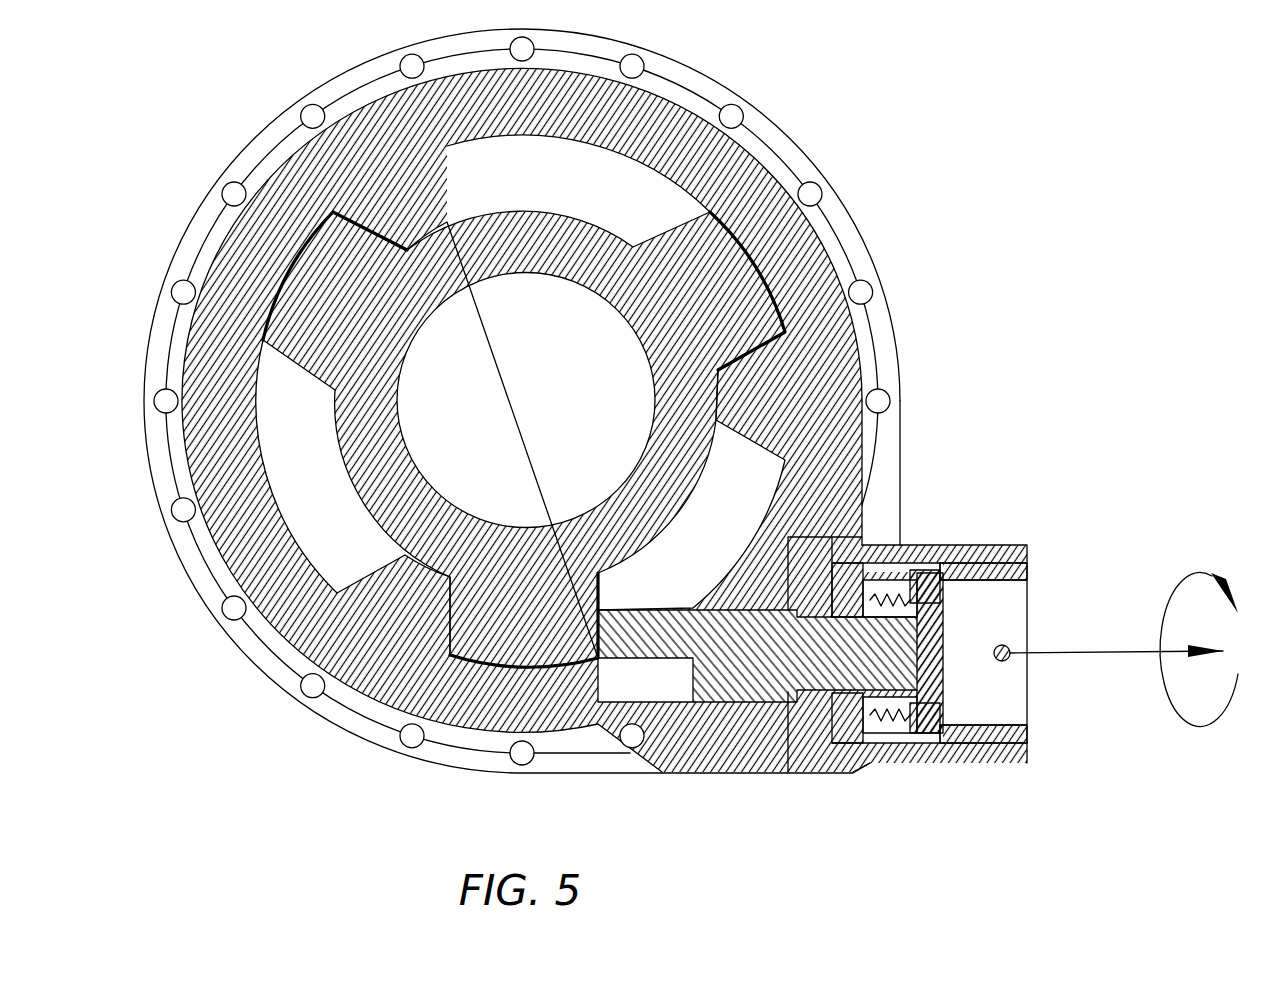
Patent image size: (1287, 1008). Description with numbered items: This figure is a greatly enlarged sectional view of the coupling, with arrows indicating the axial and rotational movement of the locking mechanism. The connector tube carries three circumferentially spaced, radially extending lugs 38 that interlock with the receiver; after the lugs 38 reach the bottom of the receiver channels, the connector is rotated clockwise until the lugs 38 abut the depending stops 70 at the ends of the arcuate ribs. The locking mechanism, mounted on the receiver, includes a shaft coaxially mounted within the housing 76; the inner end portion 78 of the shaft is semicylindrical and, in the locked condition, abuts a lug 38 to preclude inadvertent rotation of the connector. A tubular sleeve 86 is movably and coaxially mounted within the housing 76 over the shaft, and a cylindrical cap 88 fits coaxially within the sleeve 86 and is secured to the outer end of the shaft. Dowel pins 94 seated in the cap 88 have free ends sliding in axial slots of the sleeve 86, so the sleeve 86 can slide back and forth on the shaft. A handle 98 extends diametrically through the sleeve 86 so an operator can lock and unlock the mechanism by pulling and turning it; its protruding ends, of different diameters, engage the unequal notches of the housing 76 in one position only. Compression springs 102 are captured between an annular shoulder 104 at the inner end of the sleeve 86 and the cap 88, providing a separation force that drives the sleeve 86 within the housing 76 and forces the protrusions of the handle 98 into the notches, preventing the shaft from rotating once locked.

The lugs 38 is at (728, 216).
The depending stop 70 is at (755, 398).
The housing 76 is at (1028, 546).
The inner end portion of the shaft 78 is at (692, 704).
The tubular sleeve 86 is at (1029, 573).
The cylindrical cap 88 is at (945, 676).
The dowel pins 94 is at (930, 737).
The handle 98 is at (1011, 650).
The compression springs 102 is at (889, 706).
The annular shoulder 104 is at (868, 596).